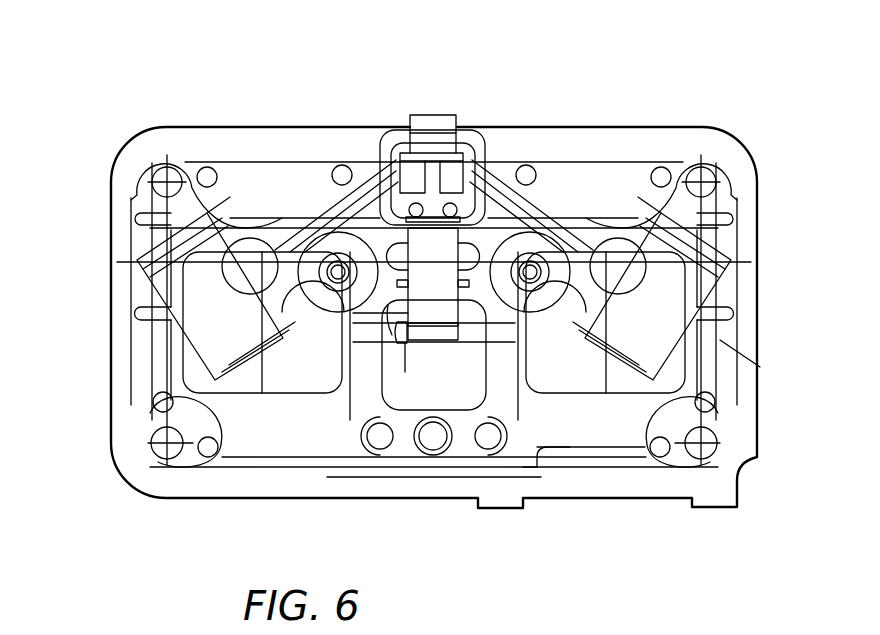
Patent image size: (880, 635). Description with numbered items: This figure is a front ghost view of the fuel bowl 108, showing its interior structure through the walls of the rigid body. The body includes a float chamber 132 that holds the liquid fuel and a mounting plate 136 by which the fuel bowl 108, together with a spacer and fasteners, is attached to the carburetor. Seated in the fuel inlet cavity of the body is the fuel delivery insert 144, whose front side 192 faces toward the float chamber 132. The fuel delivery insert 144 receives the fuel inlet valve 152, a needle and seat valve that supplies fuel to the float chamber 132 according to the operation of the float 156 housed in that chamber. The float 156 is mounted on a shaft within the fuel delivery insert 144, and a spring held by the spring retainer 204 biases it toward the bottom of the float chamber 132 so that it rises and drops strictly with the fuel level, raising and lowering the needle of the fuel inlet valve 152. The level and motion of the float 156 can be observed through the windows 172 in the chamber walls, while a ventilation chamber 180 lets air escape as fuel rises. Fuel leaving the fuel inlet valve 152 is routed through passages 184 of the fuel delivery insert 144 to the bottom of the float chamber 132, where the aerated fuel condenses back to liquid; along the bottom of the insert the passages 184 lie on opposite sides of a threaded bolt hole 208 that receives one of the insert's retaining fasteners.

The fuel bowl 108 is at (703, 78).
The float chamber 132 is at (245, 443).
The mounting plate 136 is at (738, 433).
The fuel delivery insert 144 is at (563, 263).
The fuel inlet valve 152 is at (427, 113).
The float 156 is at (182, 353).
The windows 172 is at (142, 237).
The ventilation chamber 180 is at (476, 134).
The passages 184 is at (380, 449).
The front side 192 is at (488, 240).
The spring retainer 204 is at (385, 308).
The threaded bolt hole 208 is at (435, 450).